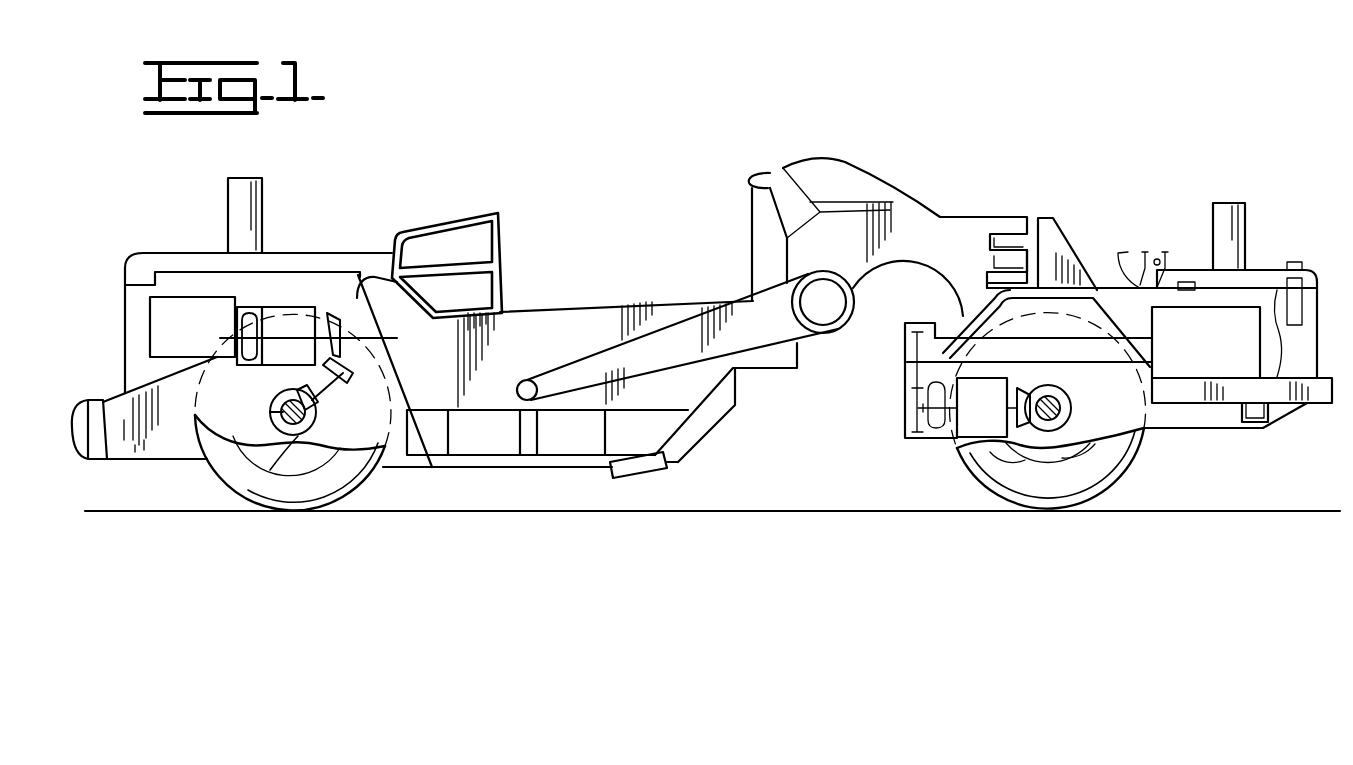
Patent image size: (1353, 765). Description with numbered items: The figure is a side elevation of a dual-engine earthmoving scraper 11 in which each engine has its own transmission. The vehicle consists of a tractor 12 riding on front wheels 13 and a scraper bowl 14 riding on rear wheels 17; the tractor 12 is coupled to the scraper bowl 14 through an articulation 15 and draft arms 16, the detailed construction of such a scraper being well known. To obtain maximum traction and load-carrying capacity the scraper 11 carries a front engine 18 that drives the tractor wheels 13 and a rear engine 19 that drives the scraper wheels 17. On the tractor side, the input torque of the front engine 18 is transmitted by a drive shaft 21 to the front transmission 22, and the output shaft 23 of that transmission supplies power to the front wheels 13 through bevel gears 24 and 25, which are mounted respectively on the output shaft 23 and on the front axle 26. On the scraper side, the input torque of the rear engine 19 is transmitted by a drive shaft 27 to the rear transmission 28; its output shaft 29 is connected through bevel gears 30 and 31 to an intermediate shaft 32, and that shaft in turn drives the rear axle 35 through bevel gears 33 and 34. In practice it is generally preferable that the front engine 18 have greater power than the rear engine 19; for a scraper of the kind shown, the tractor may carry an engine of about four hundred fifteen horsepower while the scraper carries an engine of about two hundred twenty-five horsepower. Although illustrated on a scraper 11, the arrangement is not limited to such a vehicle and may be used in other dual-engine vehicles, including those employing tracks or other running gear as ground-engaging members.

The earthmoving scraper 11 is at (680, 216).
The tractor 12 is at (1100, 240).
The front wheels 13 is at (1135, 478).
The scraper bowl 14 is at (530, 362).
The articulation 15 is at (1003, 218).
The draft arms 16 is at (688, 322).
The rear wheels 17 is at (353, 485).
The front engine 18 is at (1242, 307).
The rear engine 19 is at (187, 297).
The drive shaft 21 is at (1090, 342).
The front transmission 22 is at (893, 406).
The output shaft 23 is at (1014, 392).
The bevel gear 24 is at (1024, 422).
The bevel gear 25 is at (1062, 424).
The front axle 26 is at (1052, 398).
The drive shaft 27 is at (228, 338).
The rear transmission 28 is at (290, 304).
The output shaft 29 is at (338, 345).
The bevel gear 30 is at (332, 350).
The bevel gear 31 is at (363, 368).
The shaft 32 is at (323, 388).
The bevel gear 33 is at (300, 436).
The bevel gear 34 is at (270, 470).
The rear axle 35 is at (270, 412).